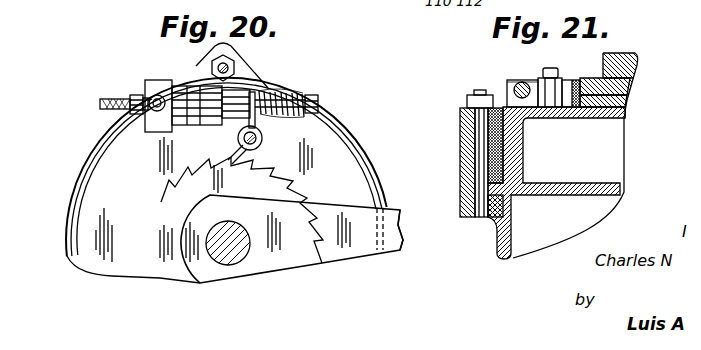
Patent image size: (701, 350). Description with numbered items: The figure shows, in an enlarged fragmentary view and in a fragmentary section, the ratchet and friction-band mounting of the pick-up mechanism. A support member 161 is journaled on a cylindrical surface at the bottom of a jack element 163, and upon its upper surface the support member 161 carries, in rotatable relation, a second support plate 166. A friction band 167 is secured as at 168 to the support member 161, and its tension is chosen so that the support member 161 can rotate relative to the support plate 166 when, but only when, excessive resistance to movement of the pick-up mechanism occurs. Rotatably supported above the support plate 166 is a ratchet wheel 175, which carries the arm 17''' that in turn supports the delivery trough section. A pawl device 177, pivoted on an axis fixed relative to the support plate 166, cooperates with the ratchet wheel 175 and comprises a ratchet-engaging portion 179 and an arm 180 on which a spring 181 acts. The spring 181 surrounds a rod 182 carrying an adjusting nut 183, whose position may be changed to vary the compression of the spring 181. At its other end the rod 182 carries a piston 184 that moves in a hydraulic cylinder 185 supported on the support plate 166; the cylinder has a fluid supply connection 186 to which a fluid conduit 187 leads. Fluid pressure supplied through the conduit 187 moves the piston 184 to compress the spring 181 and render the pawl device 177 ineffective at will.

In FIG. 20, the support member 161 is at (68, 230).
In FIG. 21, the support member 161 is at (498, 237).
In FIG. 20, the jack element 163 is at (235, 250).
In FIG. 20, the support plate 166 is at (110, 190).
In FIG. 21, the support plate 166 is at (480, 128).
In FIG. 20, the friction band 167 is at (372, 176).
In FIG. 21, the friction band 167 is at (497, 133).
In FIG. 21, the securing point of friction band 168 is at (460, 193).
In FIG. 20, the ratchet wheel 175 is at (167, 265).
In FIG. 21, the ratchet wheel 175 is at (628, 93).
In FIG. 20, the pawl device 177 is at (262, 143).
In FIG. 21, the pawl device 177 is at (545, 80).
In FIG. 20, the ratchet-engaging portion 179 is at (230, 156).
In FIG. 21, the ratchet-engaging portion 179 is at (572, 82).
In FIG. 20, the arm 180 is at (258, 117).
In FIG. 21, the arm 180 is at (513, 82).
In FIG. 20, the spring 181 is at (292, 100).
In FIG. 20, the rod 182 is at (262, 95).
In FIG. 21, the rod 182 is at (508, 88).
In FIG. 20, the adjusting nut 183 is at (318, 105).
In FIG. 20, the piston 184 is at (197, 100).
In FIG. 20, the hydraulic cylinder 185 is at (165, 130).
In FIG. 20, the fluid supply connection 186 is at (152, 96).
In FIG. 20, the fluid conduit 187 is at (100, 105).
In FIG. 20, the arm 17''' is at (359, 250).
In FIG. 21, the arm 17''' is at (644, 73).